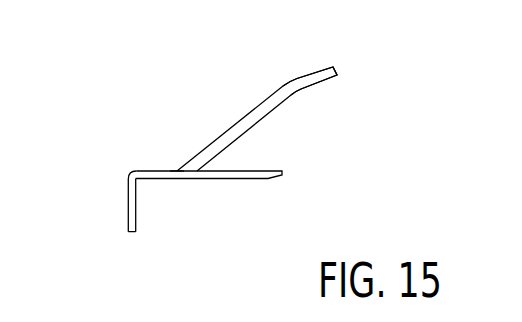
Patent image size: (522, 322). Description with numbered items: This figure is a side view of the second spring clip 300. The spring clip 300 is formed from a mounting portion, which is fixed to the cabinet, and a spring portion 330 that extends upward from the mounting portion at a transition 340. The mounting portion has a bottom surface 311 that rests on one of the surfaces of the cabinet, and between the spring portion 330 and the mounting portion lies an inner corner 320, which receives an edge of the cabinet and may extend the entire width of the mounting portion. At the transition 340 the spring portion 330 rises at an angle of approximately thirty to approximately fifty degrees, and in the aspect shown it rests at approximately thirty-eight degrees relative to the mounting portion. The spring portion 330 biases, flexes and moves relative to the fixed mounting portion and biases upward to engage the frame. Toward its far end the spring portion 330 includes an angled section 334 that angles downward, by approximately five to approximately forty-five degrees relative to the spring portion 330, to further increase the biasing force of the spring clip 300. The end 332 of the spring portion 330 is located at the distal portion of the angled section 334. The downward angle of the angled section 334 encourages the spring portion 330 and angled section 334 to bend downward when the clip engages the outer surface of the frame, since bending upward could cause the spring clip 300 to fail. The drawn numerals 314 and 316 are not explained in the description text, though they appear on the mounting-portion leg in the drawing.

The second spring clip 300 is at (272, 74).
The bottom surface 311 is at (242, 182).
The vertical leg 314 is at (128, 200).
The leg end 316 is at (136, 207).
The inner corner 320 is at (136, 181).
The spring portion 330 is at (223, 134).
The end 332 is at (342, 69).
The angled section 334 is at (293, 95).
The transition 340 is at (177, 170).